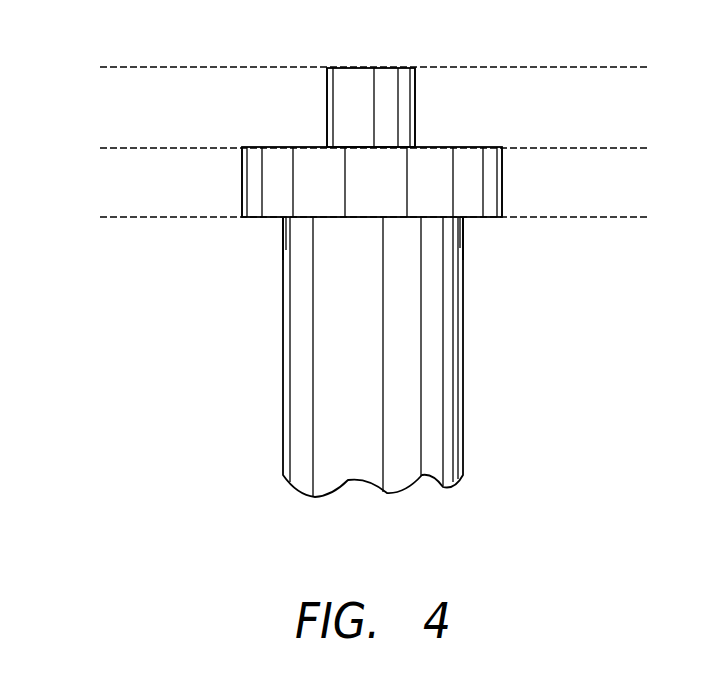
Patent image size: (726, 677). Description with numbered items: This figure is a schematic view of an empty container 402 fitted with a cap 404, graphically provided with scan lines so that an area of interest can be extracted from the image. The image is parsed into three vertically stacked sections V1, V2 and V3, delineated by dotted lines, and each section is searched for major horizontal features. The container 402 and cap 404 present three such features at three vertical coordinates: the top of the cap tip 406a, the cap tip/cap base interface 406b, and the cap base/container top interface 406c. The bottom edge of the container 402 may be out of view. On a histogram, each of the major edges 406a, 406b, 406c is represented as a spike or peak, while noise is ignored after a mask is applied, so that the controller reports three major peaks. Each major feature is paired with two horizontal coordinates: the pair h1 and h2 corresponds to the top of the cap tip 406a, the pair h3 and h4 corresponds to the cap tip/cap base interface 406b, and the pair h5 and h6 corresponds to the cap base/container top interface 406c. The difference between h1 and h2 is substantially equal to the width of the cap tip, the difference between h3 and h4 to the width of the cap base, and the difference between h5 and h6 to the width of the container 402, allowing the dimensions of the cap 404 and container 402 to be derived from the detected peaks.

The container 402 is at (455, 357).
The cap 404 is at (306, 111).
The top of the cap tip 406a is at (371, 67).
The cap tip/cap base interface 406b is at (418, 146).
The cap base/container top interface 406c is at (464, 218).
The horizontal coordinate h1 is at (326, 117).
The horizontal coordinate h2 is at (416, 115).
The horizontal coordinate h3 is at (241, 192).
The horizontal coordinate h4 is at (503, 190).
The horizontal coordinate h5 is at (282, 390).
The horizontal coordinate h6 is at (464, 392).
The vertically stacked section V1 is at (373, 243).
The vertically stacked section V2 is at (373, 164).
The vertically stacked section V3 is at (373, 84).